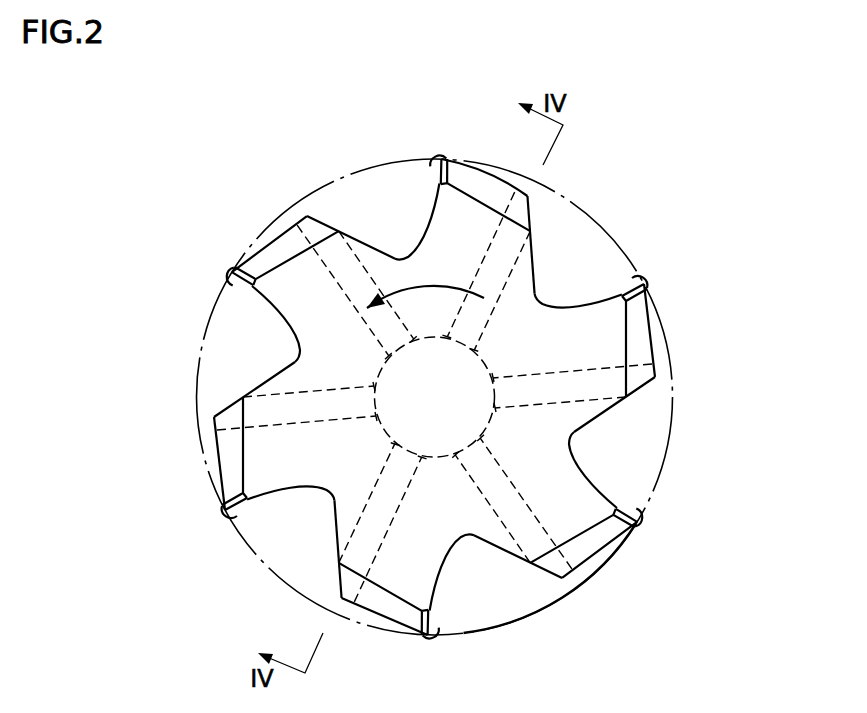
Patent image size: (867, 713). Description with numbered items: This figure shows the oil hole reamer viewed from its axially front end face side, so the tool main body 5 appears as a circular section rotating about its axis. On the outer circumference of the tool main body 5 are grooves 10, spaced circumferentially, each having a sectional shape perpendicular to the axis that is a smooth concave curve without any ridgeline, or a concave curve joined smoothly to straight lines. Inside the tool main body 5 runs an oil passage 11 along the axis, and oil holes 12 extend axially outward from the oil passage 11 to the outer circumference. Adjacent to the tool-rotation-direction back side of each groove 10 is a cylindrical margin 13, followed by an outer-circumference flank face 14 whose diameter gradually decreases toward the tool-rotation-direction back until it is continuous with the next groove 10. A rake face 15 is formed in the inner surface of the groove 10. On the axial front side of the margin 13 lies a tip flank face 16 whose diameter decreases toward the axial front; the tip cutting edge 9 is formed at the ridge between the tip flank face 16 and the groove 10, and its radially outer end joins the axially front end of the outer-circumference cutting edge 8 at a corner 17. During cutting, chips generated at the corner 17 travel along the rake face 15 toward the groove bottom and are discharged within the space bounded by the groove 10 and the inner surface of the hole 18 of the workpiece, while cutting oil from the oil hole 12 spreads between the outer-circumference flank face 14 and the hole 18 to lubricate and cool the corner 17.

The tool main body 5 is at (206, 425).
The outer-circumference cutting edge 8 is at (641, 276).
The tip cutting edge 9 is at (232, 522).
The groove 10 is at (263, 380).
The oil passage 11 is at (491, 419).
The oil hole 12 is at (338, 232).
The margin 13 is at (440, 157).
The outer-circumference flank face 14 is at (497, 176).
The rake face 15 is at (430, 205).
The tip flank face 16 is at (221, 472).
The corner 17 is at (500, 410).
The hole 18 is at (520, 612).